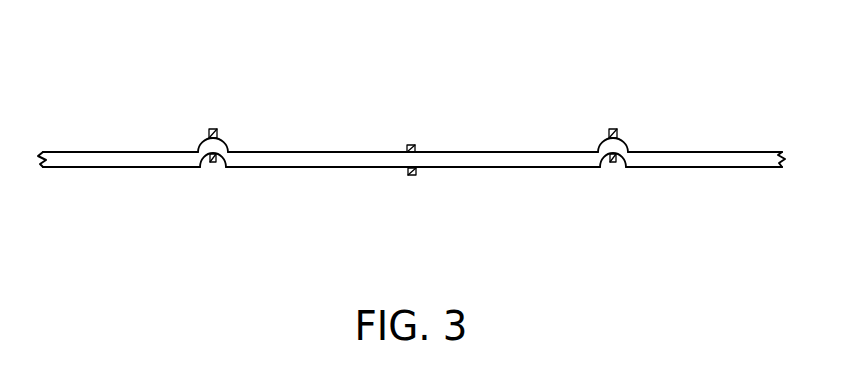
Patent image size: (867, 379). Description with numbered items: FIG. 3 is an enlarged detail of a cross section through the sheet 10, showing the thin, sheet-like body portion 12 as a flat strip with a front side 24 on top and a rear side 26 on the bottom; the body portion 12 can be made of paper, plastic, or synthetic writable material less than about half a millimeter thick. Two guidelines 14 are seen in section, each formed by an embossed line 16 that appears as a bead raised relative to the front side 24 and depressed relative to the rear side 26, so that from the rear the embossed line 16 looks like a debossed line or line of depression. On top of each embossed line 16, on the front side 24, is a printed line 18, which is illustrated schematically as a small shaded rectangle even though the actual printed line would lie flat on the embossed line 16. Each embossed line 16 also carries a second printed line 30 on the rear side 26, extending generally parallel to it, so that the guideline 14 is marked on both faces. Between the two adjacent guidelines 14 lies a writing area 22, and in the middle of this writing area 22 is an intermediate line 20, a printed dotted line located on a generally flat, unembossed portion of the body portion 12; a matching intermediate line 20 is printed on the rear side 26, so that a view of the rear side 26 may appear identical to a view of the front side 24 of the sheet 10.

The sheet 10 is at (101, 109).
The body portion 12 is at (132, 152).
The guideline 14 is at (188, 117).
The embossed line 16 is at (228, 143).
The printed line 18 is at (214, 129).
The intermediate line 20 is at (415, 146).
The writing area 22 is at (412, 110).
The front side 24 is at (65, 152).
The rear side 26 is at (115, 167).
The printed line 30 is at (216, 163).